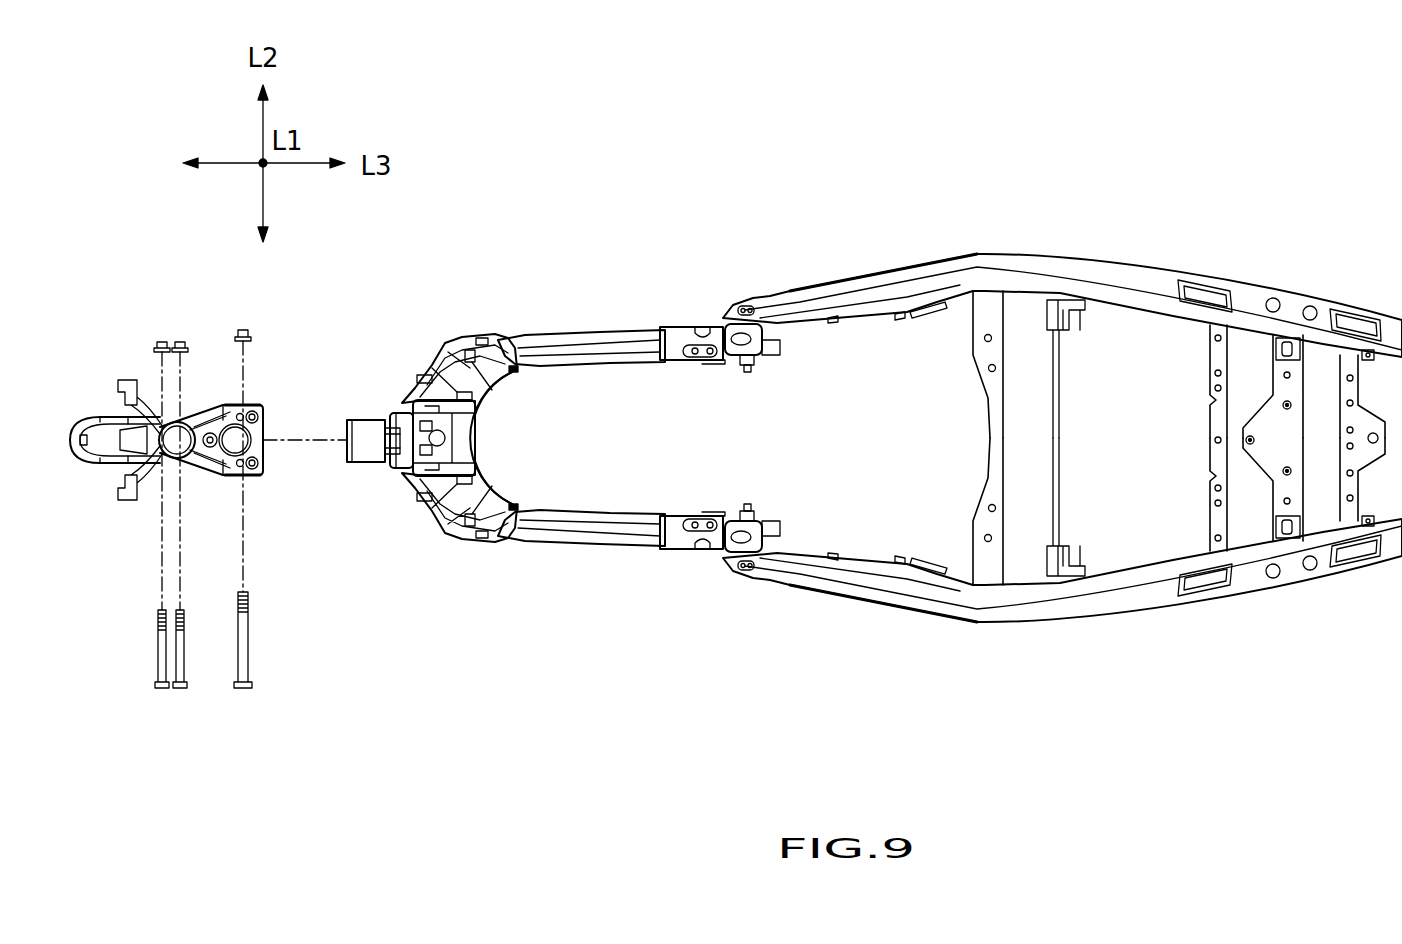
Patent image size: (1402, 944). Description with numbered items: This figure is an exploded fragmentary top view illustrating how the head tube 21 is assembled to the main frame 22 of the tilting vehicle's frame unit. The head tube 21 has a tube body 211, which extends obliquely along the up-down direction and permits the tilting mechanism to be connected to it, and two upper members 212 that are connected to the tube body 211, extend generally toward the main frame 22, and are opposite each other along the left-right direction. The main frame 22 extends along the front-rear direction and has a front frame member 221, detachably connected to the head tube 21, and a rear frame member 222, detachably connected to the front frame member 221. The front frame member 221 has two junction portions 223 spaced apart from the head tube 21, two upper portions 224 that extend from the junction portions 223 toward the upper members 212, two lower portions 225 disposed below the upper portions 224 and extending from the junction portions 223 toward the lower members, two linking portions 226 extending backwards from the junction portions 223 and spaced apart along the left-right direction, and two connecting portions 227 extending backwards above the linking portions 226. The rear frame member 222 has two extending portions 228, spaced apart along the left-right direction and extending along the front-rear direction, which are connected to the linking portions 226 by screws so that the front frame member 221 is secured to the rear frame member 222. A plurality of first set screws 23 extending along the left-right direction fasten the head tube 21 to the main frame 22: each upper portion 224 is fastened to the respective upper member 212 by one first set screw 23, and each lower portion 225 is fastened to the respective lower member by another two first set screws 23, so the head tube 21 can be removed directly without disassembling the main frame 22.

The head tube 21 is at (122, 352).
The tube body 211 is at (86, 420).
The upper members 212 is at (225, 400).
The first set screws 23 is at (162, 690).
The main frame 22 is at (836, 240).
The front frame member 221 is at (630, 585).
The rear frame member 222 is at (962, 213).
The junction portions 223 is at (430, 352).
The upper portions 224 is at (478, 428).
The lower portions 225 is at (358, 420).
The linking portions 226 is at (703, 327).
The connecting portions 227 is at (555, 330).
The extending portions 228 is at (1145, 280).